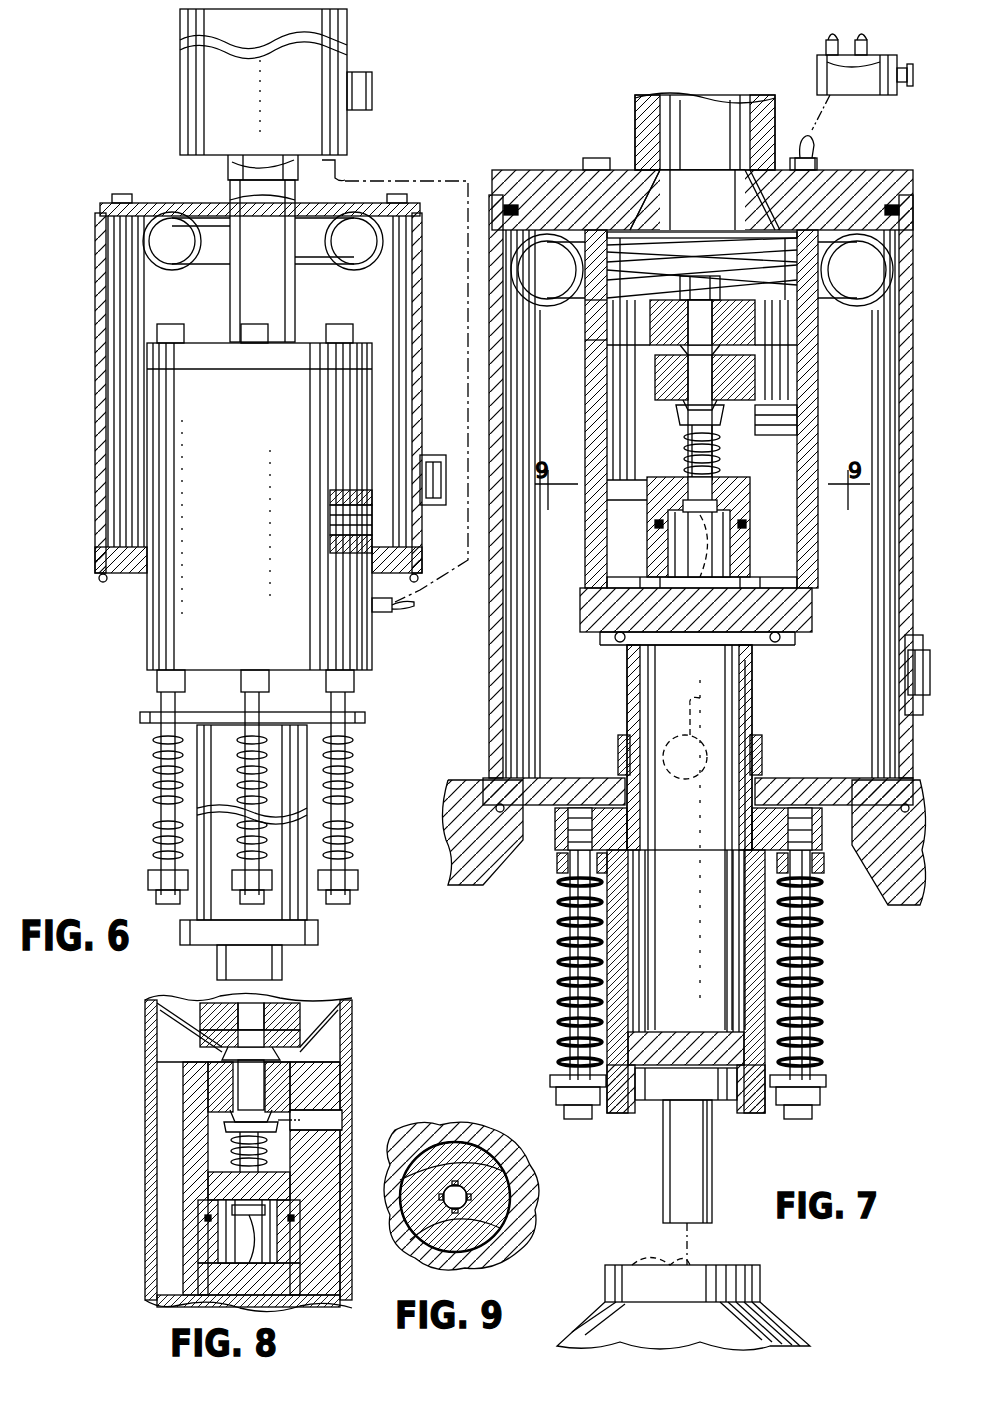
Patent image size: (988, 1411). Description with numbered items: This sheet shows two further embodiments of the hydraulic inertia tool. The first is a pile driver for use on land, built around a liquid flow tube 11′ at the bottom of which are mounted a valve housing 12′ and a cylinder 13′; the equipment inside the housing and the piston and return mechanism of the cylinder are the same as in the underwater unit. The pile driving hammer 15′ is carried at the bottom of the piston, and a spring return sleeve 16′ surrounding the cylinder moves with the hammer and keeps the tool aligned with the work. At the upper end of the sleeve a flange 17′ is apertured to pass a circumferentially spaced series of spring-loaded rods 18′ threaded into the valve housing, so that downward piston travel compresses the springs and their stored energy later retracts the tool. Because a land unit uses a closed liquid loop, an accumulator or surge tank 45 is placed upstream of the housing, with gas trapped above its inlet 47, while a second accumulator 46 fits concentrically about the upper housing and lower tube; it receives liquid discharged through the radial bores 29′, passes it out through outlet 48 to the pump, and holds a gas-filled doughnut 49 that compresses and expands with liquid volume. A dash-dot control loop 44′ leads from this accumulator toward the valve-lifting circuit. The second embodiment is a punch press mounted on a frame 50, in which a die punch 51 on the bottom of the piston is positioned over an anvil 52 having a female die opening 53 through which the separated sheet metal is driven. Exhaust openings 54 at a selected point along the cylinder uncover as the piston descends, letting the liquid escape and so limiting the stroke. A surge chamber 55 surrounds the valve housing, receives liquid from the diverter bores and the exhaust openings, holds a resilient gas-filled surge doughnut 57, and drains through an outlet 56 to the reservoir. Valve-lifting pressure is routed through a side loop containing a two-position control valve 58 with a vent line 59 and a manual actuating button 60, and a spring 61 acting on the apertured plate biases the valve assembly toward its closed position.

In FIG. 6, the accumulator or surge tank 45 is at (180, 112).
In FIG. 6, the inlet 47 is at (372, 108).
In FIG. 6, the control loop 44′ is at (425, 176).
In FIG. 6, the accumulator or surge tank 46 is at (95, 322).
In FIG. 6, the gas-filled doughnut 49 is at (170, 272).
In FIG. 6, the liquid flow tube 11′ is at (298, 286).
In FIG. 6, the outlet 48 is at (446, 476).
In FIG. 6, the radial bores 29′ is at (367, 521).
In FIG. 6, the valve housing 12′ is at (147, 624).
In FIG. 6, the cylinder 13′ is at (215, 648).
In FIG. 6, the flange 17′ is at (140, 716).
In FIG. 6, the spring-loaded rods 18′ is at (348, 760).
In FIG. 6, the spring return sleeve 16′ is at (307, 904).
In FIG. 6, the pile driving hammer 15′ is at (283, 958).
In FIG. 7, the control valve 58 is at (817, 80).
In FIG. 7, the vent line 59 is at (878, 22).
In FIG. 7, the actuating button 60 is at (918, 84).
In FIG. 7, the spring 61 is at (722, 250).
In FIG. 7, the surge doughnut 57 is at (560, 298).
In FIG. 7, the outlet 56 is at (905, 616).
In FIG. 7, the surge chamber 55 is at (490, 682).
In FIG. 7, the exhaust openings or lands 54 is at (702, 712).
In FIG. 7, the frame 50 is at (490, 882).
In FIG. 7, the die punch 51 is at (712, 1148).
In FIG. 7, the anvil 52 is at (760, 1262).
In FIG. 7, the female die opening 53 is at (668, 1262).